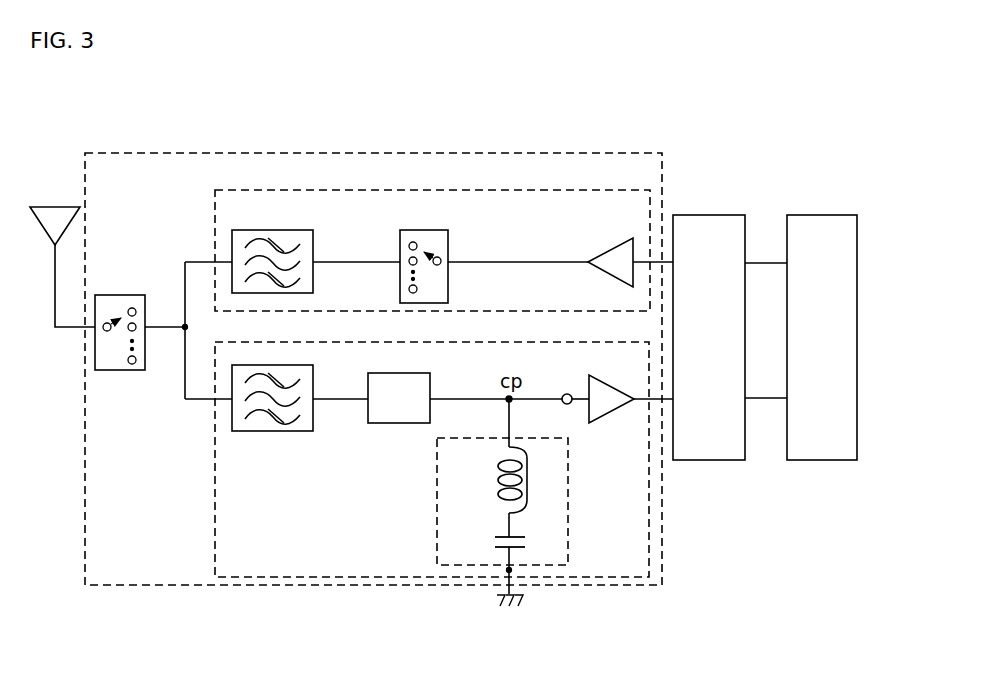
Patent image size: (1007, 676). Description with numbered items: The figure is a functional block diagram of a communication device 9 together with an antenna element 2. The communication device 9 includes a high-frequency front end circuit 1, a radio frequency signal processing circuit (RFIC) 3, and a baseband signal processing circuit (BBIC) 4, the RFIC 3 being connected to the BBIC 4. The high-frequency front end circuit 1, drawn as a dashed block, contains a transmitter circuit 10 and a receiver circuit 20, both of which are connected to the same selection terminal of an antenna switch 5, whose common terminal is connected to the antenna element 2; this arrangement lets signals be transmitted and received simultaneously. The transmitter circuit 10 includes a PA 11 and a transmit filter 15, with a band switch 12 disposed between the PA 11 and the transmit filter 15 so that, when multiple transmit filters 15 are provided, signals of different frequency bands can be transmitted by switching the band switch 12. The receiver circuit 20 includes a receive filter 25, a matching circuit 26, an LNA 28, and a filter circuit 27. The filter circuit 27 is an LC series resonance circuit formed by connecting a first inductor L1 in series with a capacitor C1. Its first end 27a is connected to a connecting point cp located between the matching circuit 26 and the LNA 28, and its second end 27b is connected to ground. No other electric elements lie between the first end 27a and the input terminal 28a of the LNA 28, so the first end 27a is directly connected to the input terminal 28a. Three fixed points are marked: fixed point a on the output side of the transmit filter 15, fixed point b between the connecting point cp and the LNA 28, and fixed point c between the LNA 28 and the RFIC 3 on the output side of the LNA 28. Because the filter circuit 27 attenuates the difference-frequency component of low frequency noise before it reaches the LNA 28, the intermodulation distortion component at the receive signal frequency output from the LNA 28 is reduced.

The communication device 9 is at (133, 99).
The high-frequency front end circuit 1 is at (185, 153).
The antenna element 2 is at (42, 207).
The radio frequency signal processing circuit (RFIC) 3 is at (700, 215).
The baseband signal processing circuit (BBIC) 4 is at (812, 215).
The antenna switch 5 is at (112, 295).
The transmitter circuit 10 is at (335, 190).
The PA 11 is at (613, 248).
The band switch 12 is at (448, 236).
The transmit filter 15 is at (313, 238).
The receiver circuit 20 is at (214, 515).
The receive filter 25 is at (313, 372).
The matching circuit 26 is at (430, 378).
The filter circuit 27 is at (437, 512).
The first end of the filter circuit 27a is at (509, 404).
The second end of the filter circuit 27b is at (509, 571).
The LNA 28 is at (611, 387).
The input terminal of the LNA 28a is at (566, 394).
The first inductor L1 is at (528, 480).
The capacitor C1 is at (526, 541).
The fixed point a is at (182, 292).
The fixed point b is at (551, 405).
The fixed point c is at (640, 403).